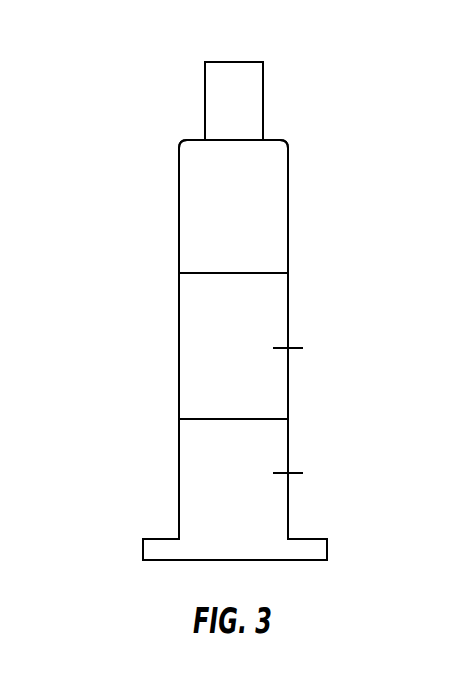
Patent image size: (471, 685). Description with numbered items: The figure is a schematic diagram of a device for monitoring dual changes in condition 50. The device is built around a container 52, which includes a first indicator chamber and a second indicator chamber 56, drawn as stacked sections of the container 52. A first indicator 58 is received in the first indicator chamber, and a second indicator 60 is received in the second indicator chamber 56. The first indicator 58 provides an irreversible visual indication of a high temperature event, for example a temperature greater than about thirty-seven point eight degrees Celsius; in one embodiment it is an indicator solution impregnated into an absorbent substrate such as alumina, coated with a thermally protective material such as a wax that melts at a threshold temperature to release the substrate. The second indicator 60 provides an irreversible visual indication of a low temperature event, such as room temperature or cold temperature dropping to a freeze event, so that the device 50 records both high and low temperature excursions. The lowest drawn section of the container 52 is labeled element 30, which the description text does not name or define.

The device for monitoring dual changes in condition 50 is at (68, 45).
The container 52 is at (273, 182).
The first indicator 58 is at (200, 220).
The second indicator chamber 56 is at (267, 307).
The second indicator 60 is at (200, 352).
The lower barrel / plunger section 30 is at (185, 466).